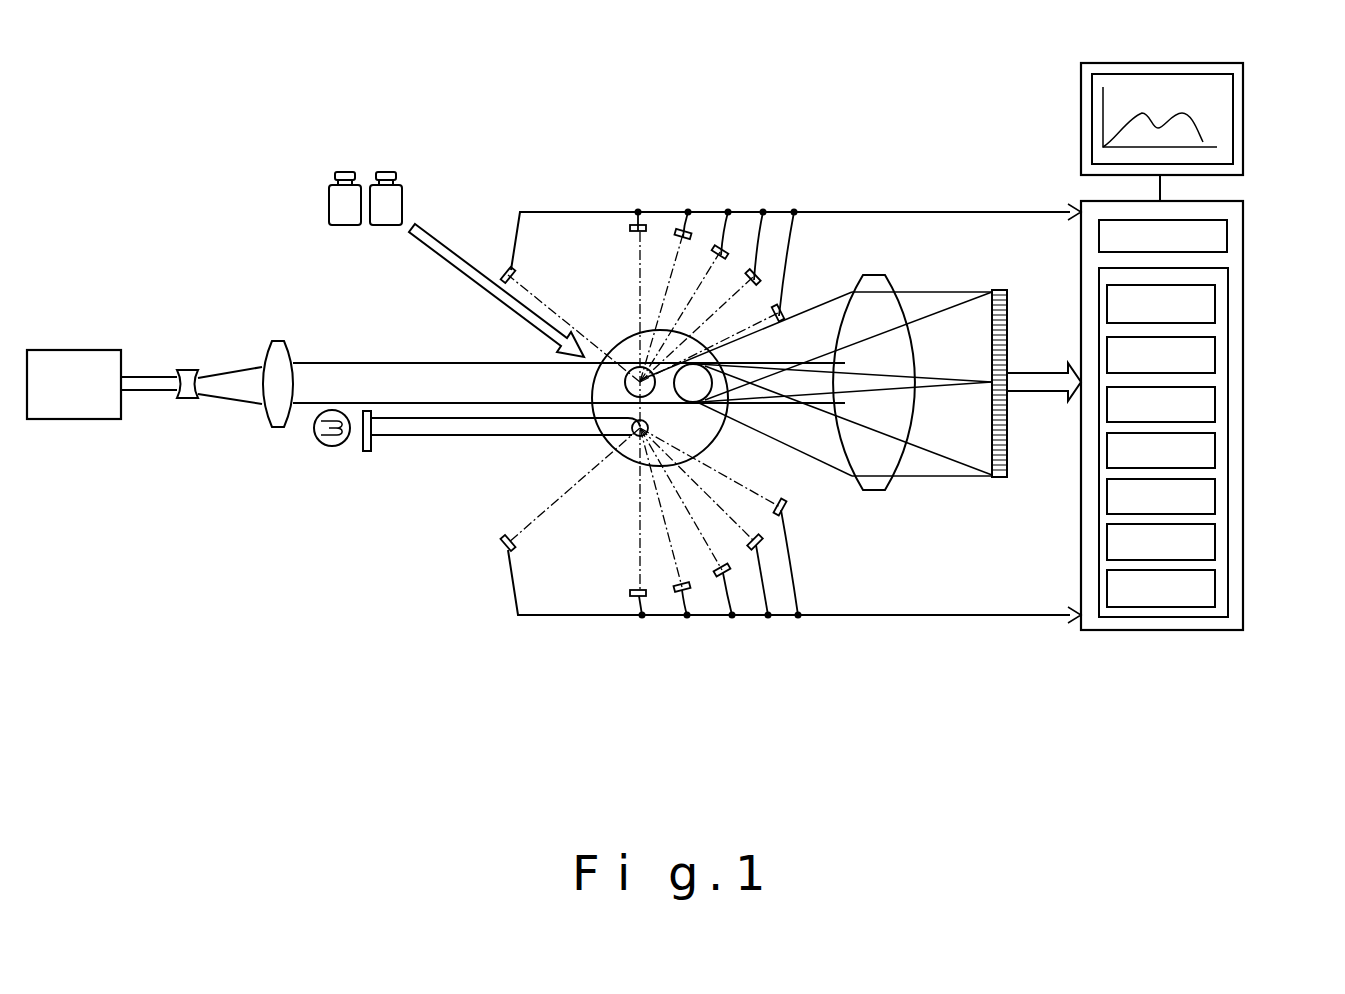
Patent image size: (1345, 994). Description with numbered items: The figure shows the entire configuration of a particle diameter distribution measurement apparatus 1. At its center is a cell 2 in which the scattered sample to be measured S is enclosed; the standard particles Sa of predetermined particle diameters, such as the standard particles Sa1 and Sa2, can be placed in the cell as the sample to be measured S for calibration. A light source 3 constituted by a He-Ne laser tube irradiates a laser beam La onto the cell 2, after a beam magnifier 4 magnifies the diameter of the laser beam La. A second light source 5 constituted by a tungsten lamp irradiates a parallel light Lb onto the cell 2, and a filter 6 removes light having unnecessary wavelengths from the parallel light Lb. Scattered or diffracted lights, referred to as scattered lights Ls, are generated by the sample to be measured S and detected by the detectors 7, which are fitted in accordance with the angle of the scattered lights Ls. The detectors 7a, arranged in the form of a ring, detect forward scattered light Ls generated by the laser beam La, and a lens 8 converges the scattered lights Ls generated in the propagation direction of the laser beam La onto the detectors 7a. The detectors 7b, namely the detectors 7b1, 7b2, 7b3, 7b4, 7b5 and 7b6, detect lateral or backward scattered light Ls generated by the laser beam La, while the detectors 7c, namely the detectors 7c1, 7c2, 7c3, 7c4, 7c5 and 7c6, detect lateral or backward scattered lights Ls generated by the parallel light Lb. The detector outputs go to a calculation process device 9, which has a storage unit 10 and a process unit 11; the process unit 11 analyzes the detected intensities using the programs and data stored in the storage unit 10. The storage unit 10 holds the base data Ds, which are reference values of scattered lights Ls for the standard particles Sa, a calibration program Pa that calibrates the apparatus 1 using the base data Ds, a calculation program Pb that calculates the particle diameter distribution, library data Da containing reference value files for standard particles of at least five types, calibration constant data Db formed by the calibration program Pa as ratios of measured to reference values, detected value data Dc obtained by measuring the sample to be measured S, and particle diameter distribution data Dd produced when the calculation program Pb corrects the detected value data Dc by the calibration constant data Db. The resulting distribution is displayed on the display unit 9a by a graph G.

The particle diameter distribution measurement apparatus 1 is at (435, 535).
The cell 2 is at (600, 432).
The light source 3 is at (57, 350).
The beam magnifier 4 is at (272, 342).
The light source 5 is at (330, 447).
The filter 6 is at (367, 452).
The detector 7 is at (783, 422).
The detectors 7a is at (996, 290).
The detectors 7b is at (788, 224).
The detector 7b1 is at (811, 245).
The detector 7b2 is at (754, 273).
The detector 7b3 is at (720, 248).
The detector 7b4 is at (683, 230).
The detector 7b5 is at (638, 212).
The detector 7b6 is at (508, 268).
The detectors 7c is at (783, 608).
The detector 7c1 is at (803, 589).
The detector 7c2 is at (755, 548).
The detector 7c3 is at (722, 575).
The detector 7c4 is at (682, 592).
The detector 7c5 is at (638, 600).
The detector 7c6 is at (509, 548).
The lens 8 is at (878, 490).
The calculation process device 9 is at (1169, 402).
The display unit 9a is at (1197, 95).
The storage unit 10 is at (1169, 442).
The process unit 11 is at (1227, 238).
The graph G is at (1168, 110).
The sample to be measured S is at (626, 378).
The standard particles Sa is at (453, 222).
The standard particles Sa1 is at (341, 172).
The standard particles Sa2 is at (386, 172).
The laser beam La is at (365, 363).
The parallel light Lb is at (426, 437).
The scattered lights Ls is at (565, 320).
The calibration program Pa is at (1215, 305).
The calculation program Pb is at (1215, 357).
The base data Ds is at (1215, 410).
The library data Da is at (1215, 453).
The calibration constant data Db is at (1215, 497).
The detected value data Dc is at (1215, 545).
The particle diameter distribution data Dd is at (1215, 592).